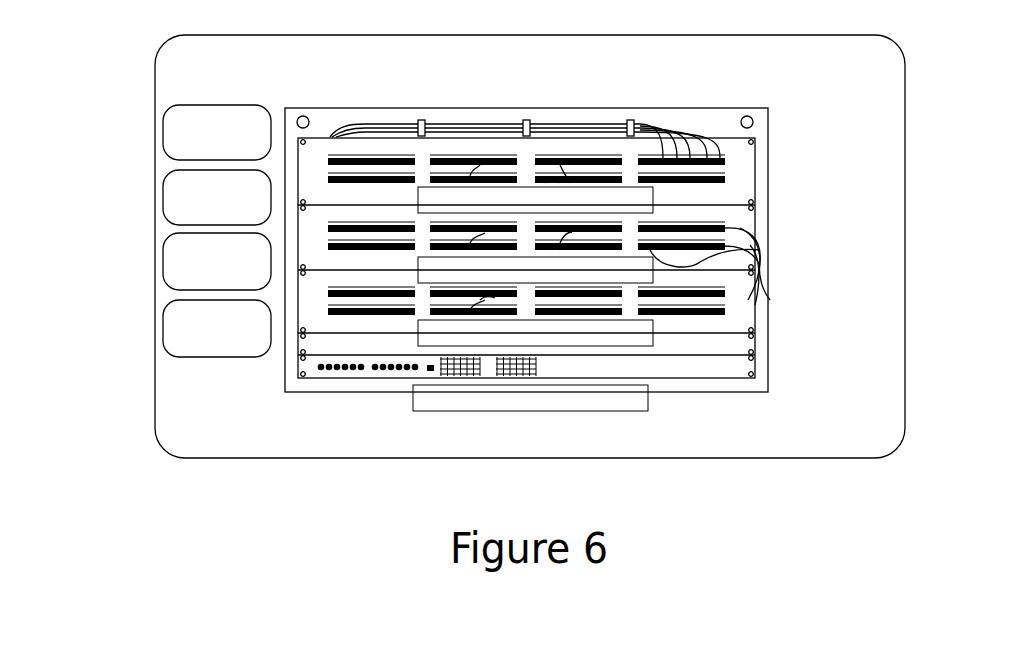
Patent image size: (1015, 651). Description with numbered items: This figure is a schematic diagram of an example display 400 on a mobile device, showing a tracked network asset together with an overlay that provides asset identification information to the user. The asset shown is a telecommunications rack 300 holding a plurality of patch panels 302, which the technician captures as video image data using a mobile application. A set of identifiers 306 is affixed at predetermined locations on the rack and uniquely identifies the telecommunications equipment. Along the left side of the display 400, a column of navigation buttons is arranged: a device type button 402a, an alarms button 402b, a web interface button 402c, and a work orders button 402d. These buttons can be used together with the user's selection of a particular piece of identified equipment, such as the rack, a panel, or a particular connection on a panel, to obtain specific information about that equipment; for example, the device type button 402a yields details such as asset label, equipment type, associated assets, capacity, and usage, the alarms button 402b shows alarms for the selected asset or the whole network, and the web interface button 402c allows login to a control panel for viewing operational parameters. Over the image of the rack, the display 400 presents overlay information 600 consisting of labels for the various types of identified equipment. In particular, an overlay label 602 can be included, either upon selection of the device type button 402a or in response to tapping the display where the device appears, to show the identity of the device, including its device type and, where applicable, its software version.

The display 400 is at (906, 470).
The overlay information 600 is at (805, 352).
The telecommunications rack 300 is at (521, 242).
The patch panels 302 is at (750, 172).
The identifiers 306 is at (300, 117).
The overlay label 602 is at (462, 190).
The device type button 402a is at (163, 123).
The alarms button 402b is at (163, 188).
The web interface button 402c is at (163, 251).
The work orders button 402d is at (163, 316).